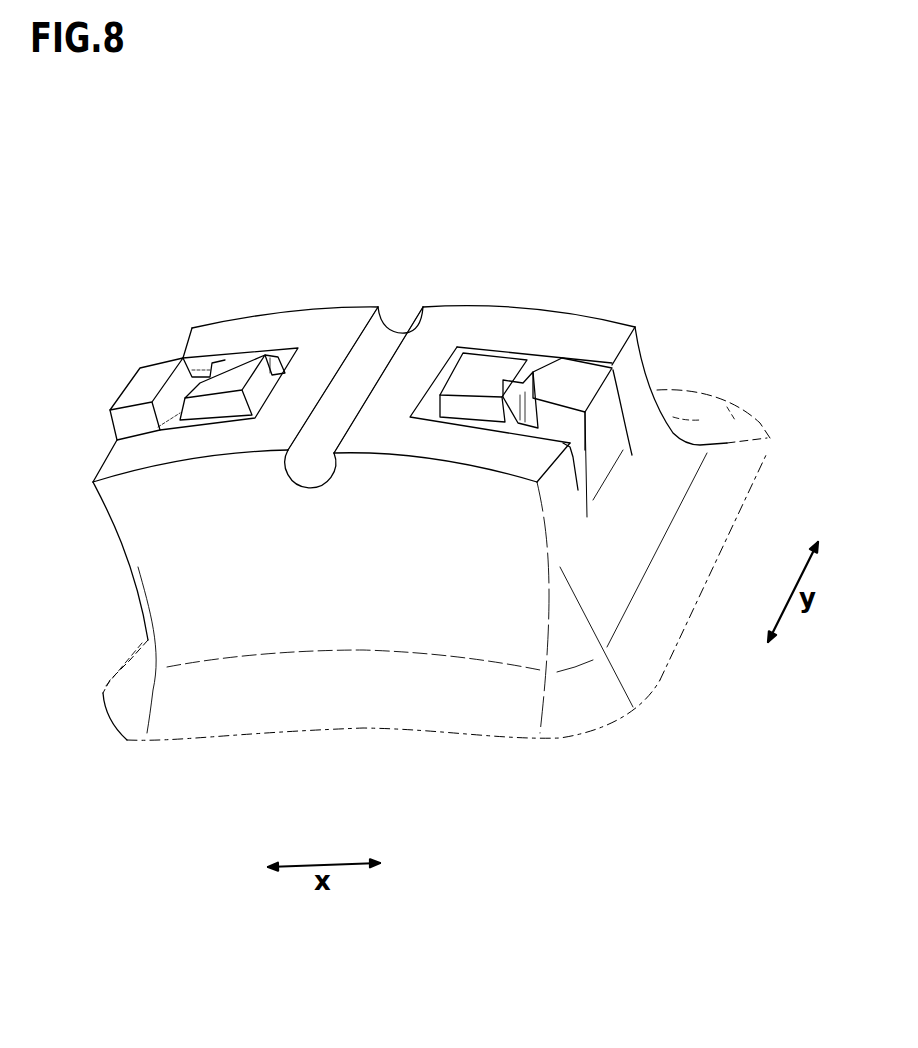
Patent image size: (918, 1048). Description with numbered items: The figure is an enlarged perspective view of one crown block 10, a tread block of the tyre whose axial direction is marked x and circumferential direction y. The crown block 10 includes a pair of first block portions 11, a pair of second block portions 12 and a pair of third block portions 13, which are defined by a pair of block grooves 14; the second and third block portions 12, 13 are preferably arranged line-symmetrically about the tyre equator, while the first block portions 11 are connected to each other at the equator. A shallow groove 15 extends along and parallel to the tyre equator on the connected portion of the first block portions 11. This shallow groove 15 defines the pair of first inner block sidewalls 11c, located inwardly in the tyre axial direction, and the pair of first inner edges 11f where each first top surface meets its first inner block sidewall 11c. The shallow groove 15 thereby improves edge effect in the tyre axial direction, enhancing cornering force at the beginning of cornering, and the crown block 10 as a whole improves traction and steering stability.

The crown block 10 is at (672, 260).
The first block portion 11 is at (327, 333).
The first inner block sidewall 11c is at (367, 343).
The first inner edge 11f is at (320, 395).
The second block portion 12 is at (228, 373).
The third block portion 13 is at (155, 383).
The block groove 14 is at (282, 367).
The shallow groove 15 is at (325, 437).